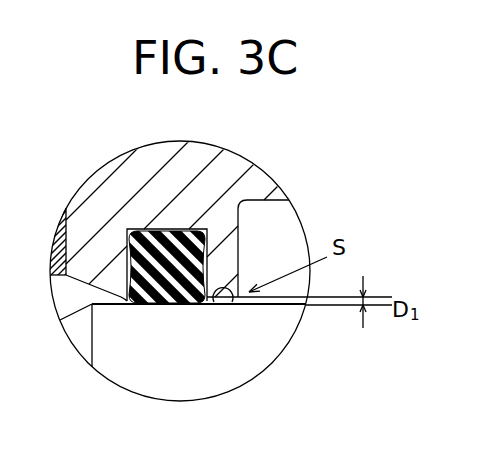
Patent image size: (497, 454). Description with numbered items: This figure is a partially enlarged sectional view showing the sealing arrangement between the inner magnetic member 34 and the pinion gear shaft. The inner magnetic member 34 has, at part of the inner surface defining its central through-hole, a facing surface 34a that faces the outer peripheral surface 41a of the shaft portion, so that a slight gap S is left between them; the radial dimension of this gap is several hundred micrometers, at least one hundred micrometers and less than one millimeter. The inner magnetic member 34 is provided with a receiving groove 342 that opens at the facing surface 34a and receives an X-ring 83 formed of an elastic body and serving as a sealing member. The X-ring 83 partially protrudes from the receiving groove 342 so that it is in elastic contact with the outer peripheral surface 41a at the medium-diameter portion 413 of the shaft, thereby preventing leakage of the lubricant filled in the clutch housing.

The inner magnetic member 34 is at (155, 162).
The receiving groove 342 is at (184, 229).
The X-ring 83 is at (150, 250).
The facing surface 34a is at (119, 298).
The medium-diameter portion 413 is at (190, 380).
The outer peripheral surface 41a is at (218, 289).